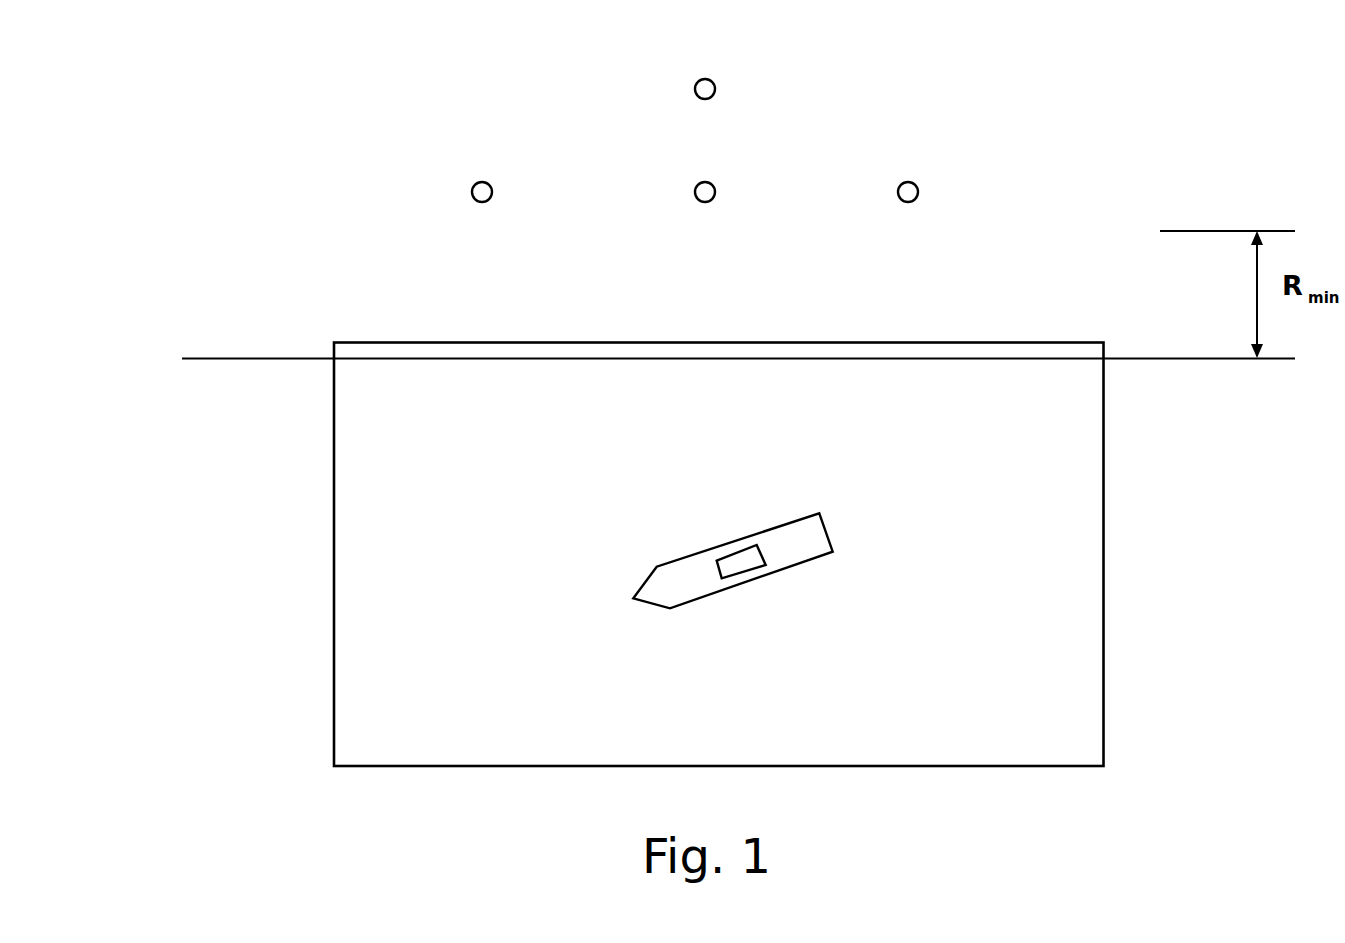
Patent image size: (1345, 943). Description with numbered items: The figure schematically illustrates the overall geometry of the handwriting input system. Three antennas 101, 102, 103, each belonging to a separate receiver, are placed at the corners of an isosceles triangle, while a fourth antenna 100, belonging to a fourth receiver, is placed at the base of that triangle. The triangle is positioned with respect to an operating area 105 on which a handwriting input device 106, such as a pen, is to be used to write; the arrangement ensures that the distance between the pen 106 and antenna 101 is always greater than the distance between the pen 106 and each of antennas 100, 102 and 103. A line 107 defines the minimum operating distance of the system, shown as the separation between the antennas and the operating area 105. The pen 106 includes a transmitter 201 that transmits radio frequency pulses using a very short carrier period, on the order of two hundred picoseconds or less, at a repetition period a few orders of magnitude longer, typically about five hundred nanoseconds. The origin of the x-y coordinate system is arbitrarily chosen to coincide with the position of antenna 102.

The antenna 100 is at (712, 199).
The antenna 101 is at (713, 87).
The antenna 102 is at (475, 185).
The antenna 103 is at (915, 186).
The operating area 105 is at (438, 718).
The handwriting input device 106 is at (797, 528).
The line 107 is at (262, 359).
The transmitter 201 is at (745, 563).